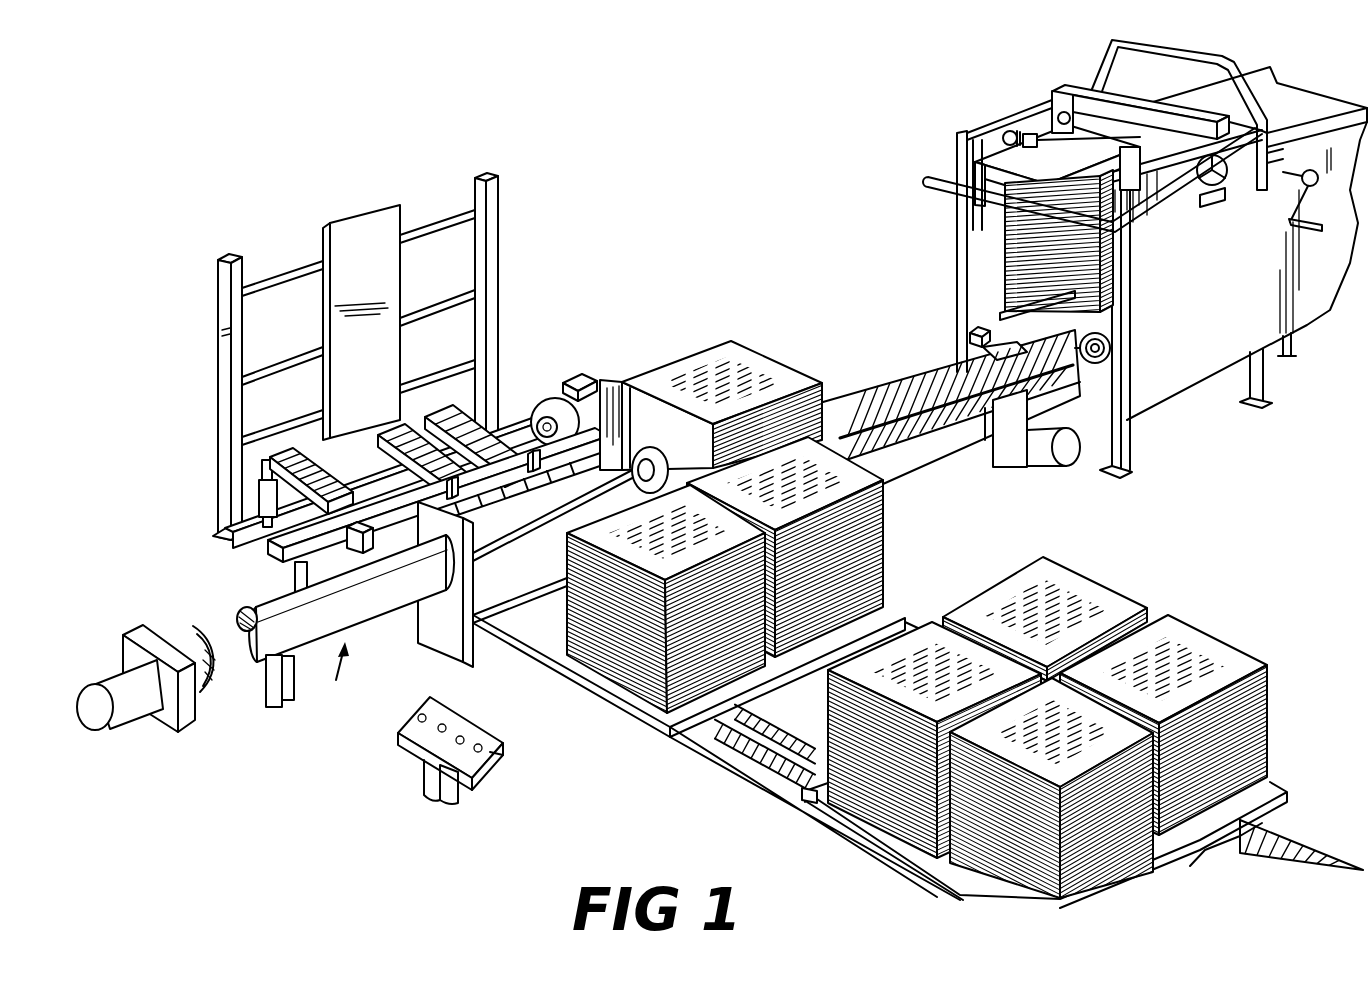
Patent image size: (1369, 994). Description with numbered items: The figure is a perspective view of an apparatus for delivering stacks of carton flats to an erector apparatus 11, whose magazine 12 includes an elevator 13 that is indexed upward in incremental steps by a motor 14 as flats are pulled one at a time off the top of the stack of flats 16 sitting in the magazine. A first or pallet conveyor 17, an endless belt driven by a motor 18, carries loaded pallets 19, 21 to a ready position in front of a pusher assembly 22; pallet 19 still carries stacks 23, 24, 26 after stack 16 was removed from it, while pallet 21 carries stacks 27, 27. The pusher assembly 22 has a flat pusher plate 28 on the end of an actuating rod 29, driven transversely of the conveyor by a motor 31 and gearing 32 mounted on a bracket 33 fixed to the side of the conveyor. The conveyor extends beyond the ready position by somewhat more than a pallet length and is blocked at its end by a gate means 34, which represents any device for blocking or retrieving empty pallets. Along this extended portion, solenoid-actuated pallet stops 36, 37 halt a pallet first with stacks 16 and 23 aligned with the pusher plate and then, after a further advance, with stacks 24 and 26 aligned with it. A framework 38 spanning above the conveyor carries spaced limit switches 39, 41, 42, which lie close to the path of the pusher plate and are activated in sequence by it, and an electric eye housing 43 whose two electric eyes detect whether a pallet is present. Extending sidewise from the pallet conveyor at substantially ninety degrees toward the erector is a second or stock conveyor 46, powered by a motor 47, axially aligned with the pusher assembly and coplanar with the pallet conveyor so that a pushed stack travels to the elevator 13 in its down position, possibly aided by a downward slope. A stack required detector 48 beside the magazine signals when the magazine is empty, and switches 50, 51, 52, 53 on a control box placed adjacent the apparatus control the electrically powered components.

The erector apparatus 11 is at (1185, 393).
The magazine 12 is at (980, 230).
The elevator 13 is at (1002, 312).
The motor 14 is at (1112, 348).
The stack of flats 16 is at (1000, 268).
The pallet conveyor 17 is at (775, 780).
The motor 18 is at (546, 398).
The pallet 19 is at (542, 640).
The pallet 21 is at (806, 804).
The pusher assembly 22 is at (339, 677).
The stack 23 is at (720, 348).
The stack 24 is at (560, 662).
The stack 26 is at (885, 528).
The stacks 27 is at (970, 604).
The pusher plate 28 is at (616, 382).
The actuating rod 29 is at (512, 527).
The motor 31 is at (120, 686).
The gearing 32 is at (258, 646).
The bracket 33 is at (442, 638).
The gate means 34 is at (488, 288).
The pallet stop 36 is at (378, 550).
The pallet stop 37 is at (258, 503).
The framework 38 is at (268, 558).
The limit switch 39 is at (434, 465).
The limit switch 41 is at (540, 422).
The limit switch 42 is at (584, 378).
The electric eye housing 43 is at (268, 552).
The stock conveyor 46 is at (925, 382).
The motor 47 is at (1045, 452).
The stack required detector 48 is at (968, 338).
The switch 50 is at (418, 718).
The switch 51 is at (438, 732).
The switch 52 is at (428, 770).
The switch 53 is at (492, 752).